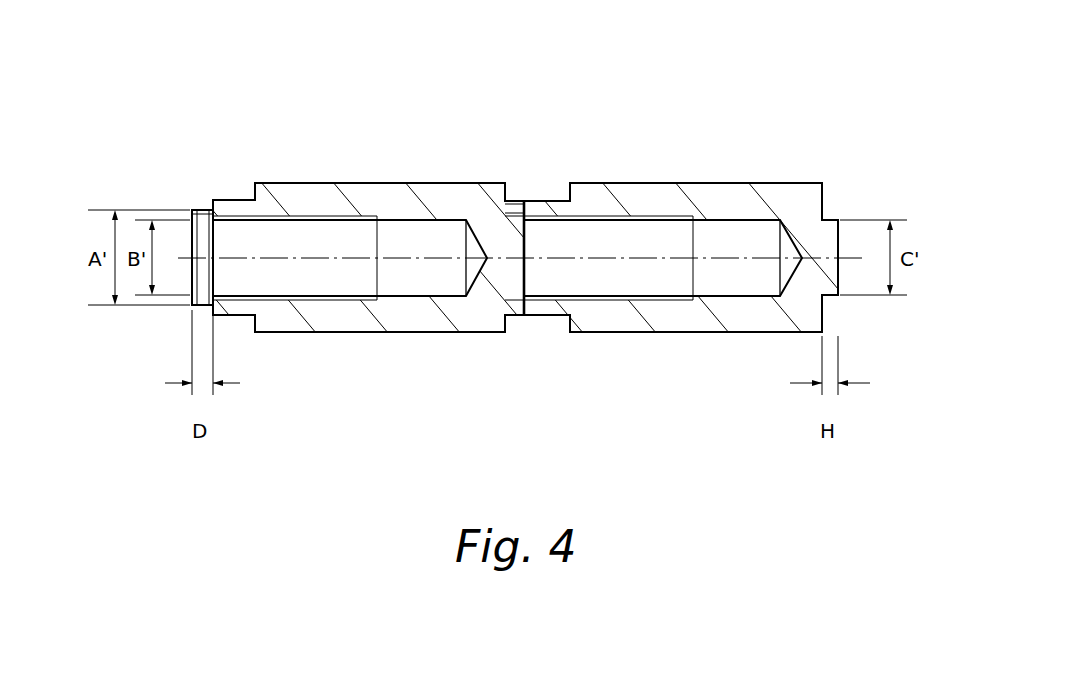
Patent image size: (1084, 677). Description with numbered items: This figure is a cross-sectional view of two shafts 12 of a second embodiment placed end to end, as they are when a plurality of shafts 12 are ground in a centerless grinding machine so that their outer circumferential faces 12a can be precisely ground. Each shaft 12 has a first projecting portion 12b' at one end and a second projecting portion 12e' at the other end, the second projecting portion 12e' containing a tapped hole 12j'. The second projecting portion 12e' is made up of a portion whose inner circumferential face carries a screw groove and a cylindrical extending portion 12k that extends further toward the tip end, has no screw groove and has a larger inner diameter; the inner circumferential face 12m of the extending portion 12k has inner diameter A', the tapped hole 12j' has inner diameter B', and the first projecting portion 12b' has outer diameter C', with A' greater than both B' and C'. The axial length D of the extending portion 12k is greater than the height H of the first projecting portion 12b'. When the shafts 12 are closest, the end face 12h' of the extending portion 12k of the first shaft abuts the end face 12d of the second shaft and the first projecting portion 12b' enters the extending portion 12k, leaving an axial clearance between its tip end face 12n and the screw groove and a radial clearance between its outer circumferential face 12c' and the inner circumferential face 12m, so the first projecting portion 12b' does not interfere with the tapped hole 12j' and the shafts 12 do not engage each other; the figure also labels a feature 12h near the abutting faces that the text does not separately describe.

The shaft 12 is at (340, 180).
The outer circumferential face 12a is at (395, 206).
The first projecting portion 12b' is at (722, 254).
The outer circumferential face 12c' is at (697, 127).
The end face 12d is at (513, 270).
The second projecting portion 12e' is at (429, 143).
The hole 12h is at (604, 190).
The end face 12h' is at (334, 121).
The tapped hole 12j' is at (507, 305).
The extending portion 12k is at (204, 202).
The inner circumferential face 12m is at (190, 222).
The tip end face 12n is at (838, 278).